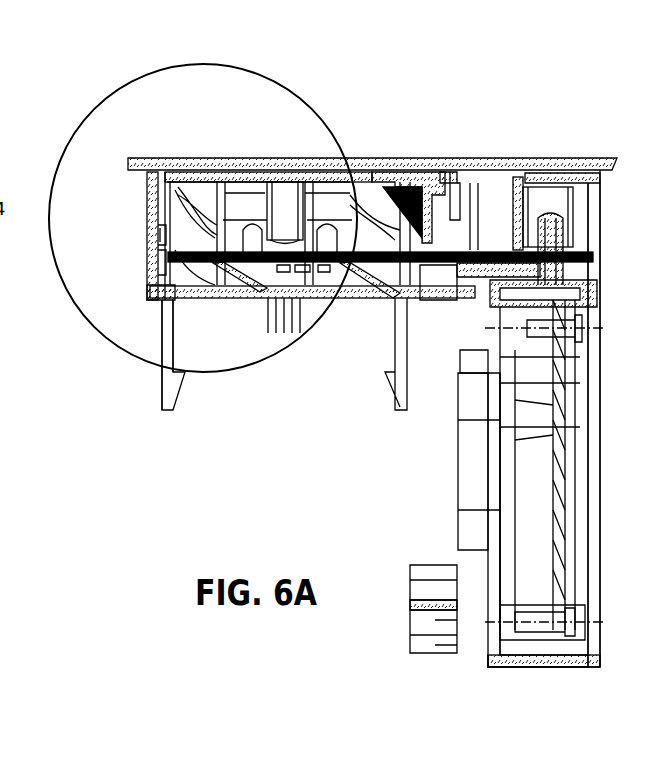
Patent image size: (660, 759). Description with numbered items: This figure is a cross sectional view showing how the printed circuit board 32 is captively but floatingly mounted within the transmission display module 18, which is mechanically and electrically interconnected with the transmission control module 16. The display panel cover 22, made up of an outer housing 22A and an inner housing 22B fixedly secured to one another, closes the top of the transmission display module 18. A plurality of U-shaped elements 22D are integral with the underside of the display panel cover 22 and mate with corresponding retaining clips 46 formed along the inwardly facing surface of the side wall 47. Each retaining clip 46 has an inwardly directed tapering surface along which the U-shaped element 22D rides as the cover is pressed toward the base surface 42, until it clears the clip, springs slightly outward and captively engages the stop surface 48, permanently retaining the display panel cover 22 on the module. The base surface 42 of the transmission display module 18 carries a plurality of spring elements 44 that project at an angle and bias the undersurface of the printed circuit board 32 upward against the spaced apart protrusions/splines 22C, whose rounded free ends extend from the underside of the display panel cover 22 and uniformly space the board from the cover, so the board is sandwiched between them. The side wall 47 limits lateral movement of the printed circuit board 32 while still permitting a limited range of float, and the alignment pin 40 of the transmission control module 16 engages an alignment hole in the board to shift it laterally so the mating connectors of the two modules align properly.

The transmission control module 16 is at (592, 512).
The transmission display module 18 is at (292, 157).
The display panel cover 22 is at (480, 160).
The outer housing 22A is at (358, 178).
The inner housing 22B is at (360, 175).
The protrusions/splines 22C is at (205, 230).
The U-shaped element 22D is at (165, 217).
The printed circuit board 32 is at (225, 298).
The alignment pin 40 is at (588, 230).
The base surface 42 is at (160, 273).
The spring elements 44 is at (350, 290).
The retaining clip 46 is at (158, 235).
The side wall 47 is at (152, 300).
The stop surface 48 is at (153, 257).